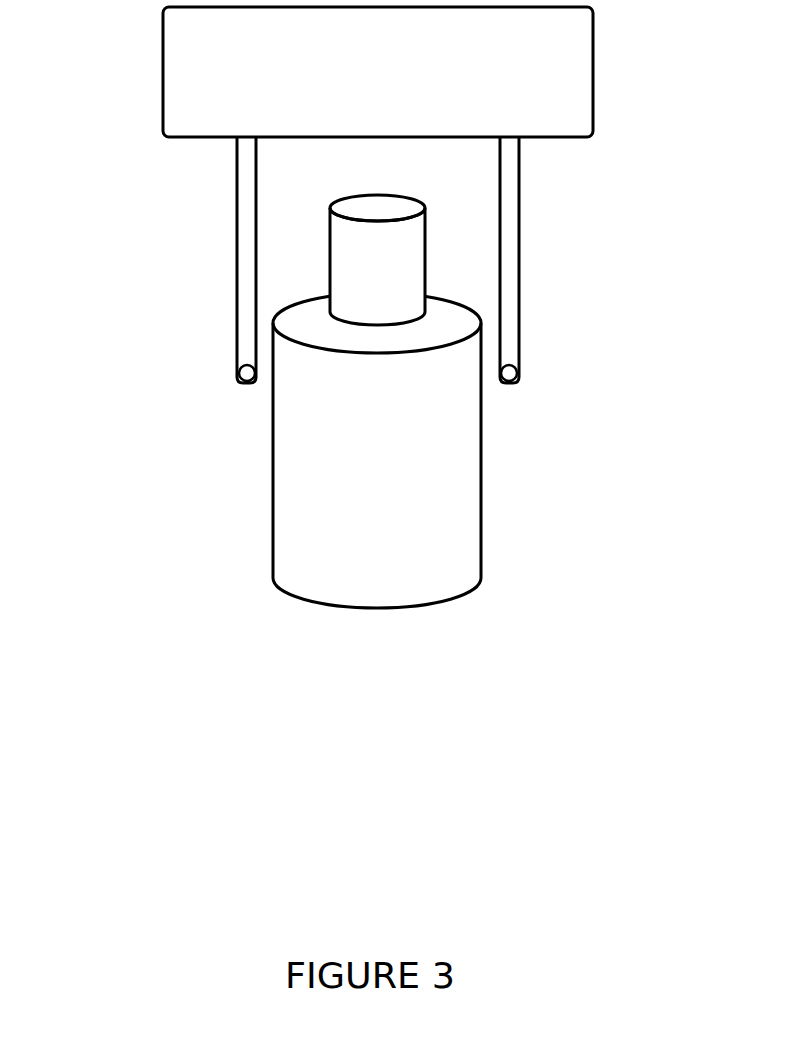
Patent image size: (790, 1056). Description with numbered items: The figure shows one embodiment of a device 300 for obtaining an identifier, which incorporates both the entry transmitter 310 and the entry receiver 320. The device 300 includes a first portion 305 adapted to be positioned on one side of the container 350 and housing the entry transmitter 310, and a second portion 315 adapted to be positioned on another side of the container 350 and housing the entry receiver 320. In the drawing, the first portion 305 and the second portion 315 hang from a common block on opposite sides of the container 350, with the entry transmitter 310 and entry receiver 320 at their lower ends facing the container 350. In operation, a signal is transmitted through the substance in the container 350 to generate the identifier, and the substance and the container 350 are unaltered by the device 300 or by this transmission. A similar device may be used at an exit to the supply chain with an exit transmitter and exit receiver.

The device 300 is at (163, 73).
The first portion 305 is at (238, 262).
The entry transmitter 310 is at (240, 378).
The second portion 315 is at (519, 262).
The entry receiver 320 is at (515, 382).
The container 350 is at (273, 448).